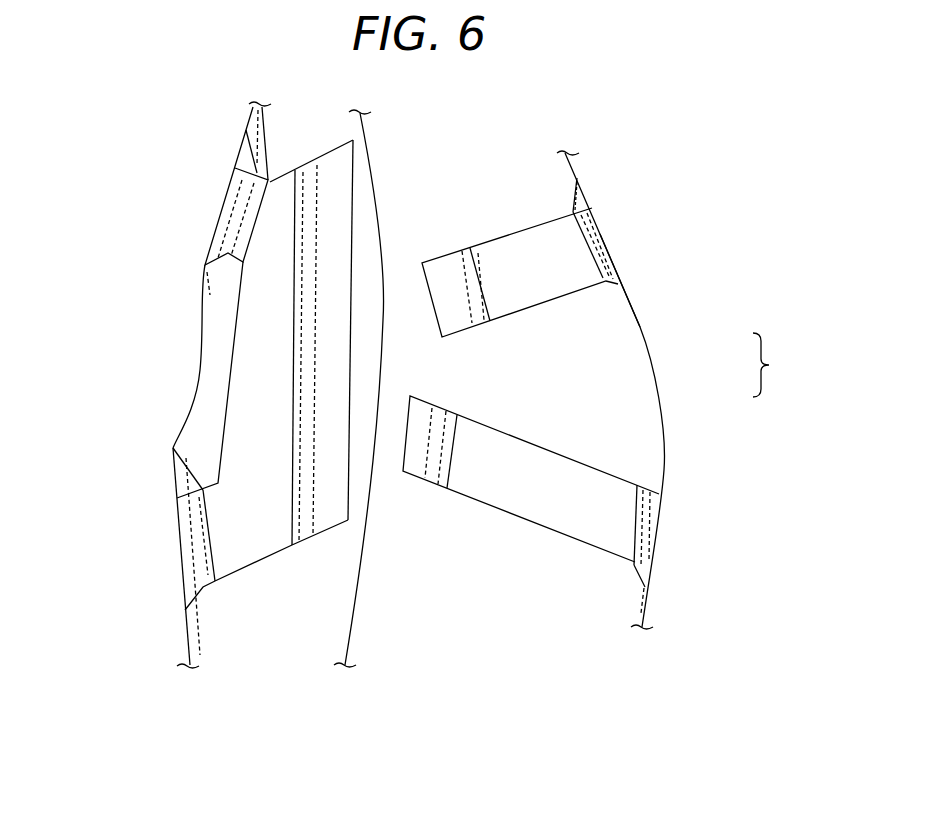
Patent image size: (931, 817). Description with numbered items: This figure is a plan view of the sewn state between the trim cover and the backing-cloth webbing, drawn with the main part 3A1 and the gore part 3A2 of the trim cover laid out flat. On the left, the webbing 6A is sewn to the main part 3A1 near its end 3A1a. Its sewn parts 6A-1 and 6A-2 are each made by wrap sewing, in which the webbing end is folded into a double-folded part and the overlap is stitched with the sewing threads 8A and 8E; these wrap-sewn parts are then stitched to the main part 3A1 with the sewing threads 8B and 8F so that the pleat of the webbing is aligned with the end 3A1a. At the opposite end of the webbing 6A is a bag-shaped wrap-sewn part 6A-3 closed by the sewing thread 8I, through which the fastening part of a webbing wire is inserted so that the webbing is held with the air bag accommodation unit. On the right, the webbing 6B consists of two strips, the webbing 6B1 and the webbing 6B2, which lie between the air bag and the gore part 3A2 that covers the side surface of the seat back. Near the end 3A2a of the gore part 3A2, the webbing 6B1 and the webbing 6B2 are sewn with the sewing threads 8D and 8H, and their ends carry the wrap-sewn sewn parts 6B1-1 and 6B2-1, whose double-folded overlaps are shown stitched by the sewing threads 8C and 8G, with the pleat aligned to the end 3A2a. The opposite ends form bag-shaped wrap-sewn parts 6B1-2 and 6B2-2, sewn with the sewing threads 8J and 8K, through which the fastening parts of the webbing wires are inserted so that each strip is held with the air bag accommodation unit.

The webbing 6A is at (228, 409).
The sewn part 6A-1 is at (207, 183).
The sewn part 6A-2 is at (154, 558).
The wrap-sewn part 6A-3 is at (333, 520).
The sewing thread 8A is at (272, 180).
The sewing thread 8B is at (242, 153).
The sewing thread 8E is at (218, 588).
The sewing thread 8F is at (187, 577).
The sewing thread 8I is at (313, 520).
The main part 3A1 is at (212, 400).
The end 3A1a is at (203, 340).
The gore part 3A2 is at (662, 390).
The end 3A2a is at (637, 313).
The webbing 6B is at (603, 390).
The webbing 6B1 is at (586, 275).
The sewn part 6B1-1 is at (628, 223).
The wrap-sewn part 6B1-2 is at (456, 276).
The webbing 6B2 is at (589, 478).
The sewn part 6B2-1 is at (665, 549).
The wrap-sewn part 6B2-2 is at (437, 457).
The fastener 8C is at (567, 225).
The sewing thread 8D is at (600, 220).
The fastener 8G is at (630, 548).
The sewing thread 8H is at (653, 568).
The sewing thread 8J is at (472, 310).
The sewing thread 8K is at (433, 423).